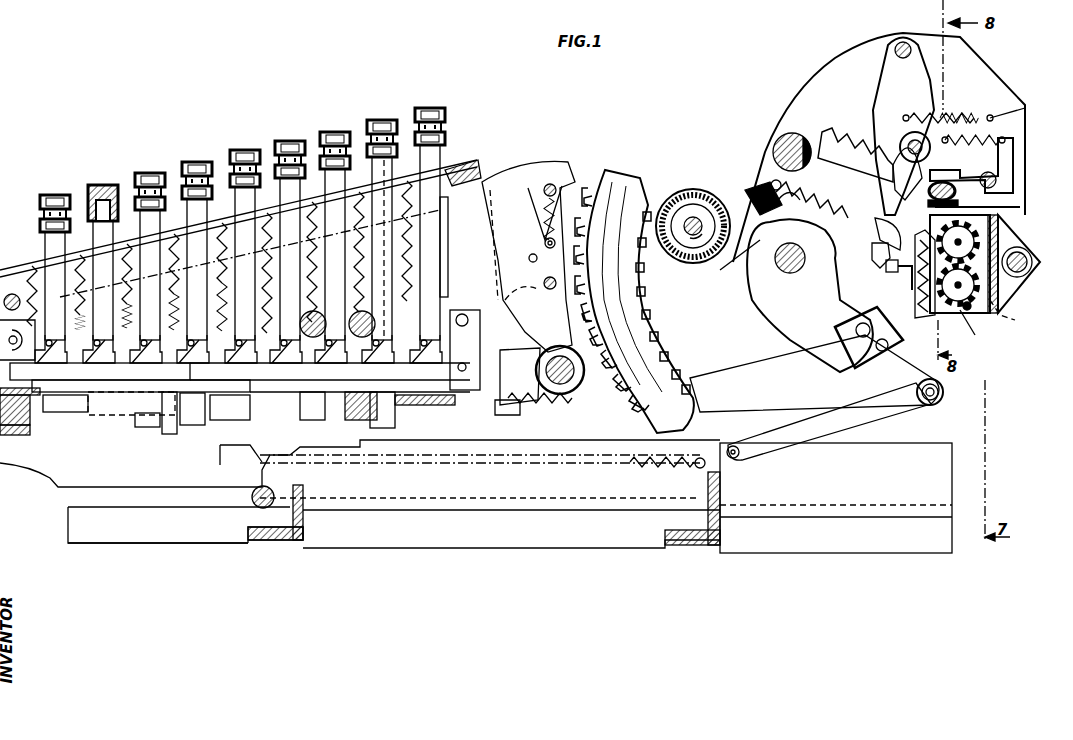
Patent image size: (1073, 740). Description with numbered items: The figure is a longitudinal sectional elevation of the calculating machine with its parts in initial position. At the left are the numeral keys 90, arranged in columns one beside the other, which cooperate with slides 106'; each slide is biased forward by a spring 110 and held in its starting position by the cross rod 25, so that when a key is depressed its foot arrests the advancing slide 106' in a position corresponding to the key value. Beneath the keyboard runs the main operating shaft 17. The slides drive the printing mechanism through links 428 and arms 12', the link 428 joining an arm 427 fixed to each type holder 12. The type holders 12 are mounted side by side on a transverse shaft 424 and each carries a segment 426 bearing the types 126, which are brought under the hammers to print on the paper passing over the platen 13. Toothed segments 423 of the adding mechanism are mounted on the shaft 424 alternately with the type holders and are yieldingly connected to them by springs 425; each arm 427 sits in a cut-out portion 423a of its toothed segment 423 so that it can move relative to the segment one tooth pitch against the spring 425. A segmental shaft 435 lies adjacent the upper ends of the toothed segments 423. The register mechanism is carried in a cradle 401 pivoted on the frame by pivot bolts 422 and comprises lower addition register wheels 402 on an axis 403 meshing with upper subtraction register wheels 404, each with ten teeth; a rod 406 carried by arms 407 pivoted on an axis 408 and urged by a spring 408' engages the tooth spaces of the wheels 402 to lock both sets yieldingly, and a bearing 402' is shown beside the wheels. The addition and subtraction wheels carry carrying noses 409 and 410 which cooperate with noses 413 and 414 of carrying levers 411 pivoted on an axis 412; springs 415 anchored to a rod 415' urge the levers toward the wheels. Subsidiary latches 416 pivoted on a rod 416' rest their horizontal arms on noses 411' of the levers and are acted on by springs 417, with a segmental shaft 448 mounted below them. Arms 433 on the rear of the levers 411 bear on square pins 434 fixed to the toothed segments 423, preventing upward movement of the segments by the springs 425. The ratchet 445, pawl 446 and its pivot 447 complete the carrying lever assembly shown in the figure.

The numeral keys 90 is at (50, 243).
The cross rod 25 is at (257, 505).
The slide 106' is at (269, 539).
The spring 110 is at (661, 465).
The main operating shaft 17 is at (545, 372).
The type holder 12 is at (638, 305).
The arm 12' is at (814, 373).
The platen 13 is at (690, 196).
The types 126 is at (645, 283).
The segment 426 is at (614, 205).
The spring 425 is at (772, 183).
The toothed segment 423 is at (825, 148).
The cut-out portion 423a is at (790, 273).
The shaft 424 is at (745, 268).
The segmental shaft 435 is at (773, 150).
The carrying nose 410 is at (821, 200).
The nose 414 is at (878, 232).
The arm 433 is at (880, 262).
The pin 434 is at (895, 273).
The pivot bolt 422 is at (920, 282).
The nose 413 is at (860, 318).
The arm 427 is at (944, 393).
The link 428 is at (893, 410).
The cradle 401 is at (995, 232).
The addition register wheel 402 is at (952, 298).
The bearing 402' is at (1037, 261).
The axis 403 is at (995, 305).
The subtraction register wheel 404 is at (1000, 216).
The rod 406 is at (972, 315).
The arm 407 is at (1005, 318).
The axis 408 is at (1025, 264).
The spring 408' is at (1040, 272).
The carrying nose 409 is at (965, 312).
The segmental shaft 448 is at (990, 210).
The carrying lever 411 is at (886, 120).
The nose 411' is at (998, 192).
The axis 412 is at (903, 42).
The spring 415 is at (948, 105).
The rod 415' is at (1030, 104).
The subsidiary latch 416 is at (971, 165).
The rod 416' is at (1025, 172).
The spring 417 is at (1005, 135).
The ratchet 445 is at (872, 152).
The ratchet pawl 446 is at (891, 154).
The pawl pivot 447 is at (903, 140).